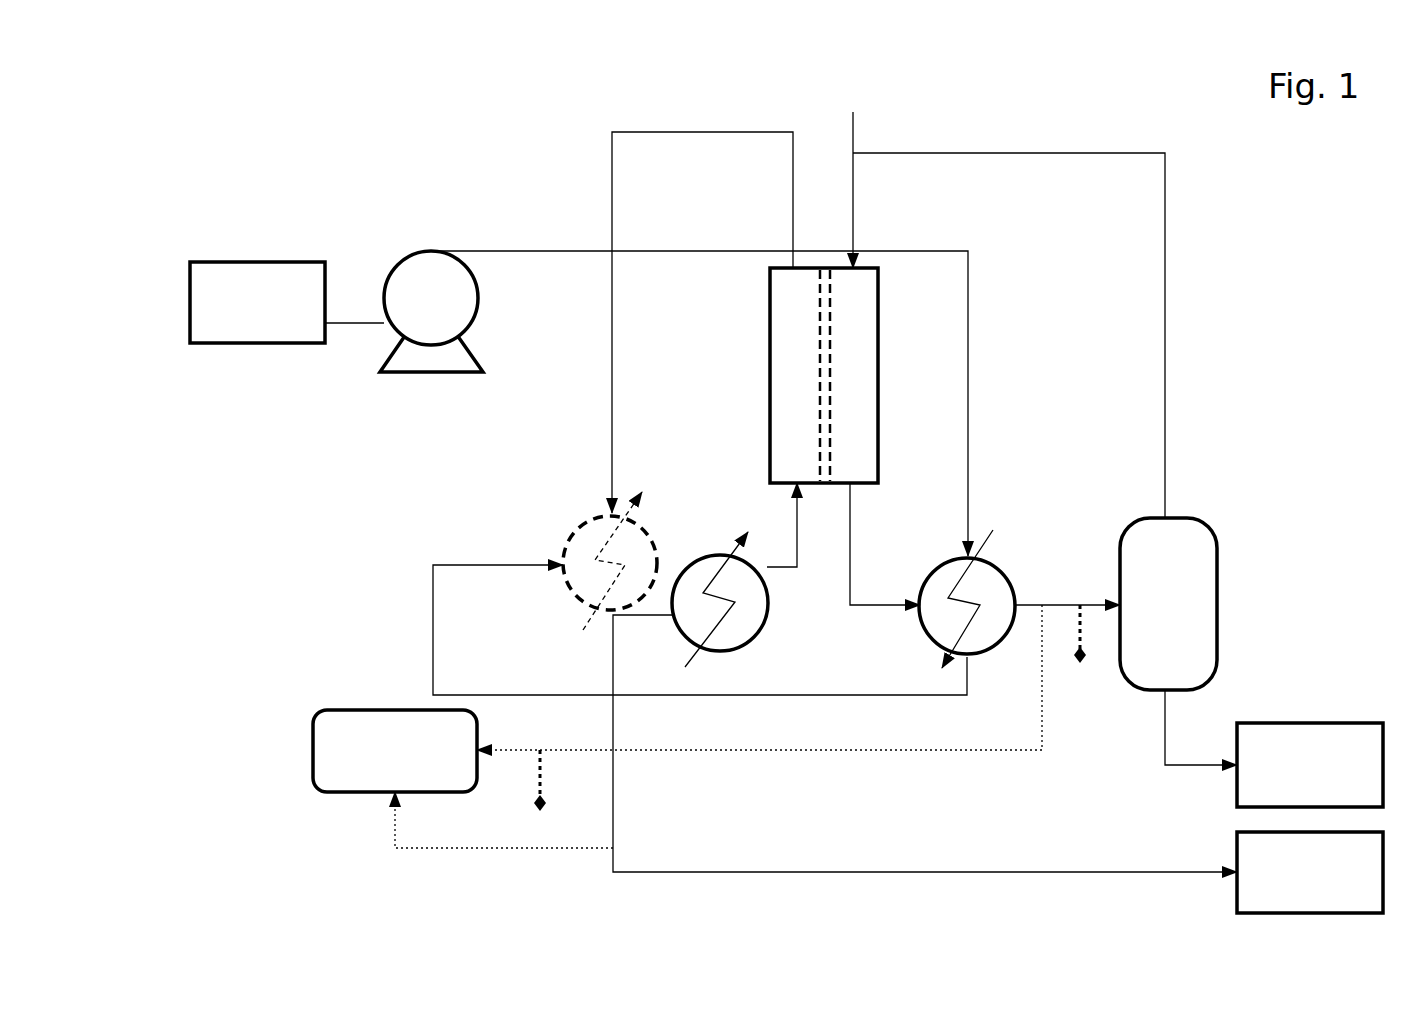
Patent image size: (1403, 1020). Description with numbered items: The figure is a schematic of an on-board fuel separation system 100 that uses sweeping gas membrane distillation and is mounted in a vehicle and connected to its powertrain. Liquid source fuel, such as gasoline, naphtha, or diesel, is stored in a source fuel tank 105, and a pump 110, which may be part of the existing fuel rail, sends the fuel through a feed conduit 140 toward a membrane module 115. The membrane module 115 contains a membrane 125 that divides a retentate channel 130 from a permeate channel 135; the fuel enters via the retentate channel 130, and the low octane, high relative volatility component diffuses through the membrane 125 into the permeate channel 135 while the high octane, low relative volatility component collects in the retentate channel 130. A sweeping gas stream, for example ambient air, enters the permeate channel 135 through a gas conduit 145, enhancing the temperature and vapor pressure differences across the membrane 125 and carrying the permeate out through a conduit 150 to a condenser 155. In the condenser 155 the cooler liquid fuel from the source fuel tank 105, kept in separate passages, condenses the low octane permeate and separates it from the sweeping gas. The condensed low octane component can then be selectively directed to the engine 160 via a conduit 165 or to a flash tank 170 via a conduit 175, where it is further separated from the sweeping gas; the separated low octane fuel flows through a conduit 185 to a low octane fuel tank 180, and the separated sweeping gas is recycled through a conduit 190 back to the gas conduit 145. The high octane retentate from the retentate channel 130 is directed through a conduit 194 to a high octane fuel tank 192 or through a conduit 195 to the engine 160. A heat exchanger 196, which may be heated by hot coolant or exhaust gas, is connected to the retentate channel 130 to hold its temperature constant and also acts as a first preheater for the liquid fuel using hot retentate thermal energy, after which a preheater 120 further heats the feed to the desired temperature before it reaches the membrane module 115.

The on-board fuel separation system 100 is at (256, 111).
The source fuel tank 105 is at (258, 278).
The pump 110 is at (420, 272).
The membrane module 115 is at (763, 302).
The preheater 120 is at (712, 552).
The membrane 125 is at (827, 268).
The retentate channel 130 is at (771, 452).
The permeate channel 135 is at (877, 448).
The feed conduit 140 is at (590, 250).
The gas conduit 145 is at (855, 228).
The conduit 150 is at (862, 605).
The condenser 155 is at (945, 580).
The engine 160 is at (392, 728).
The conduit 165 is at (820, 752).
The flash tank 170 is at (1148, 558).
The conduit 175 is at (1063, 605).
The low octane fuel tank 180 is at (1310, 737).
The conduit 185 is at (1163, 730).
The conduit 190 is at (1051, 153).
The high octane fuel tank 192 is at (1300, 912).
The conduit 194 is at (665, 130).
The conduit 195 is at (500, 852).
The heat exchanger 196 is at (585, 548).